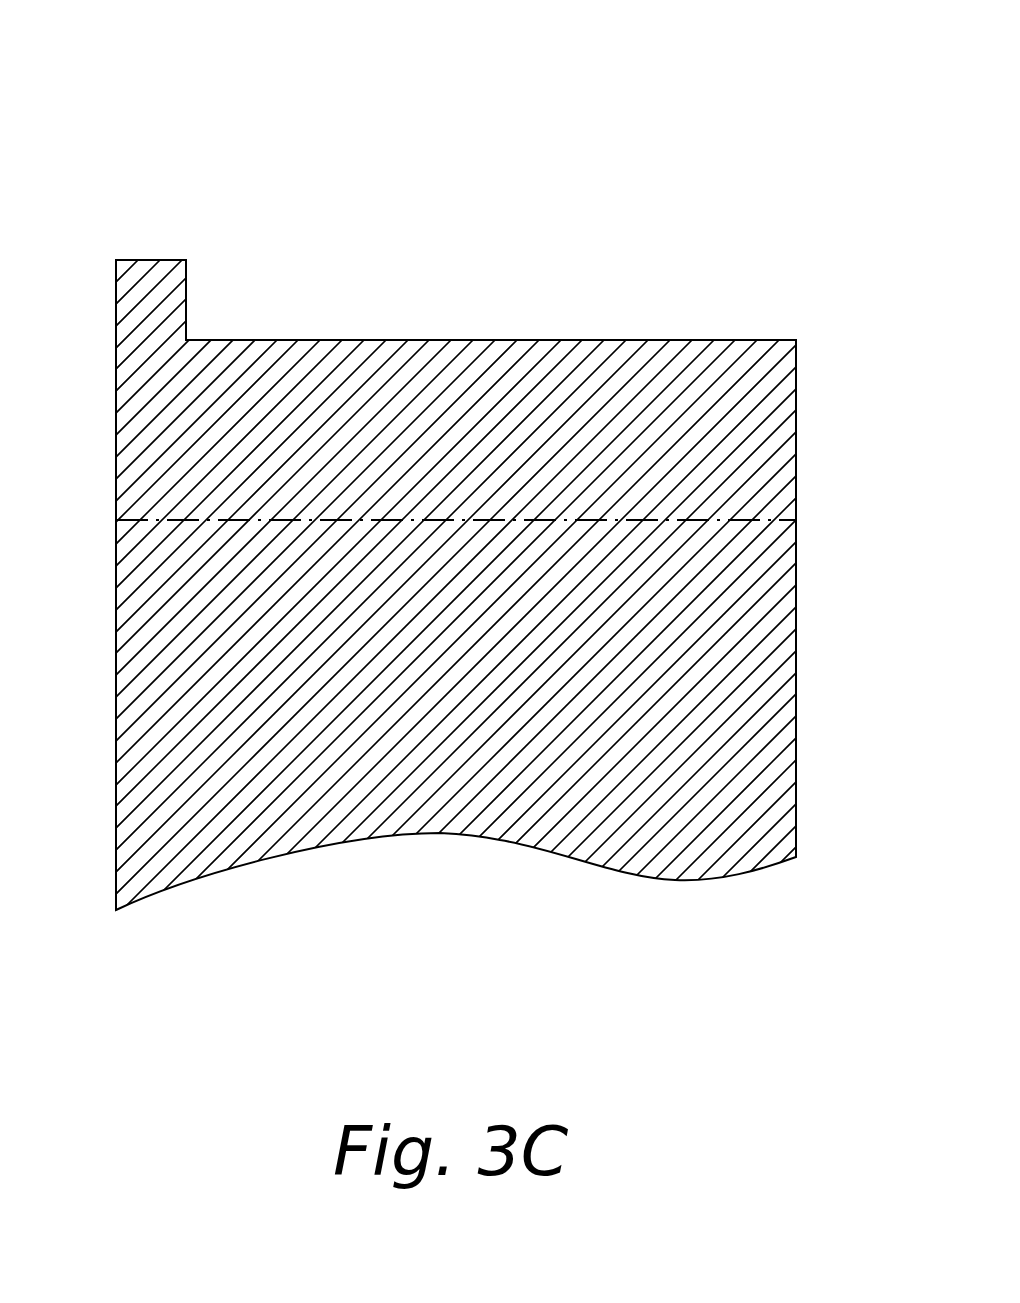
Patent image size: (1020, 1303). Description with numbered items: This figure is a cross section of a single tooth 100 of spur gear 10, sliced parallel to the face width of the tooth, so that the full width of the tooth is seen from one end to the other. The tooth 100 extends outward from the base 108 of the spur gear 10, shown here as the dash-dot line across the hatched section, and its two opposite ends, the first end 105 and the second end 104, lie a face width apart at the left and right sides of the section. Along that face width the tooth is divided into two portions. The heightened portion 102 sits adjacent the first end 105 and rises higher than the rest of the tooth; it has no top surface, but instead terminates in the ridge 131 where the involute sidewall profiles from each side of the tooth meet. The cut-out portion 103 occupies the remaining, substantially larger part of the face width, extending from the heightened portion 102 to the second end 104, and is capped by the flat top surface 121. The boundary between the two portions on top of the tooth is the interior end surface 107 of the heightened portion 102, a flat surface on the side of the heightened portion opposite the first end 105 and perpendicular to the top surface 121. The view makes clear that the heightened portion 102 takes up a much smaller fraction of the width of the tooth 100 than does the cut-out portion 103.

The spur gear 10 is at (543, 797).
The tooth 100 is at (758, 318).
The heightened portion 102 is at (163, 134).
The cut-out portion 103 is at (645, 283).
The second end 104 is at (797, 423).
The first end 105 is at (116, 428).
The interior end surface 107 is at (187, 313).
The base 108 is at (797, 518).
The top surface 121 is at (587, 340).
The ridge 131 is at (133, 260).